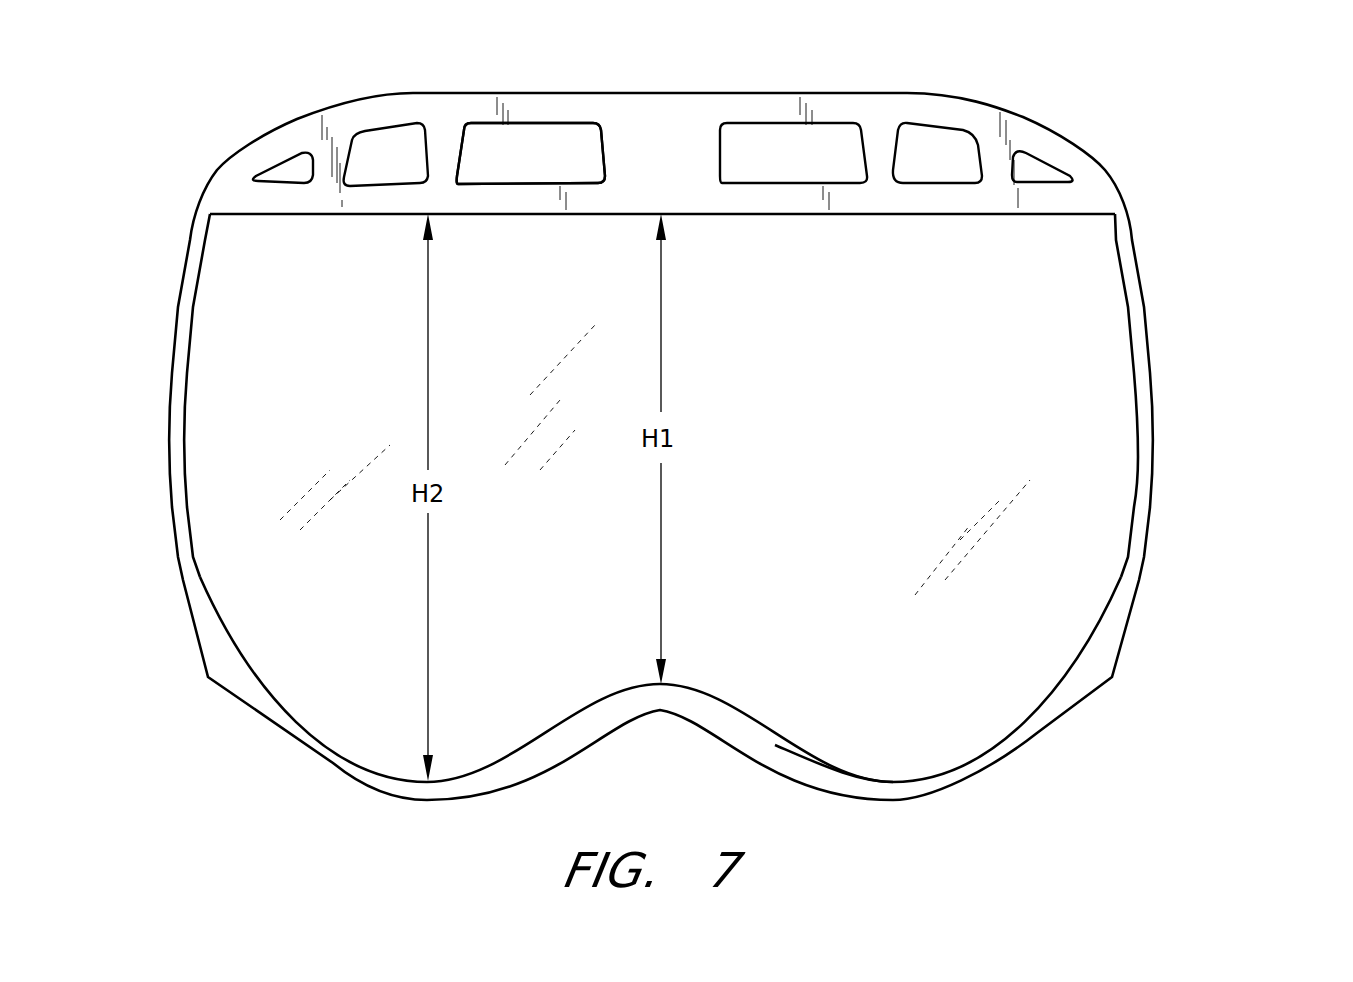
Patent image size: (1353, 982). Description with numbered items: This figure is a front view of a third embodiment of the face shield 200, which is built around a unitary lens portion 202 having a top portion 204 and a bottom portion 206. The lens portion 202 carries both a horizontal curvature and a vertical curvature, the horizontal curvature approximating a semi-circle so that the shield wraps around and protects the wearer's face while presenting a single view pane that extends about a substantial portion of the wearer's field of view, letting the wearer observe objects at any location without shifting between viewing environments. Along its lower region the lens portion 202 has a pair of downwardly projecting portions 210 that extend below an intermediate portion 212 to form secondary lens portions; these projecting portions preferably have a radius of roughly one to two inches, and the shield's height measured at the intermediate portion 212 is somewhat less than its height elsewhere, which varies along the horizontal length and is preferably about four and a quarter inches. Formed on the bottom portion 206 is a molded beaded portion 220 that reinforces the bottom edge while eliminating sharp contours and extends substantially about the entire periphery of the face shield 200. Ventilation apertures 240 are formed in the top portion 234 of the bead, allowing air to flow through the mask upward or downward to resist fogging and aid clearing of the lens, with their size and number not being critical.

The face shield 200 is at (1183, 92).
The lens portion 202 is at (882, 370).
The top portion 204 is at (1090, 253).
The bottom portion 206 is at (1097, 537).
The downwardly projecting portions 210 is at (348, 745).
The intermediate portion 212 is at (613, 677).
The molded beaded portion 220 is at (802, 767).
The top portion of the bead 234 is at (683, 163).
The ventilation apertures 240 is at (543, 148).